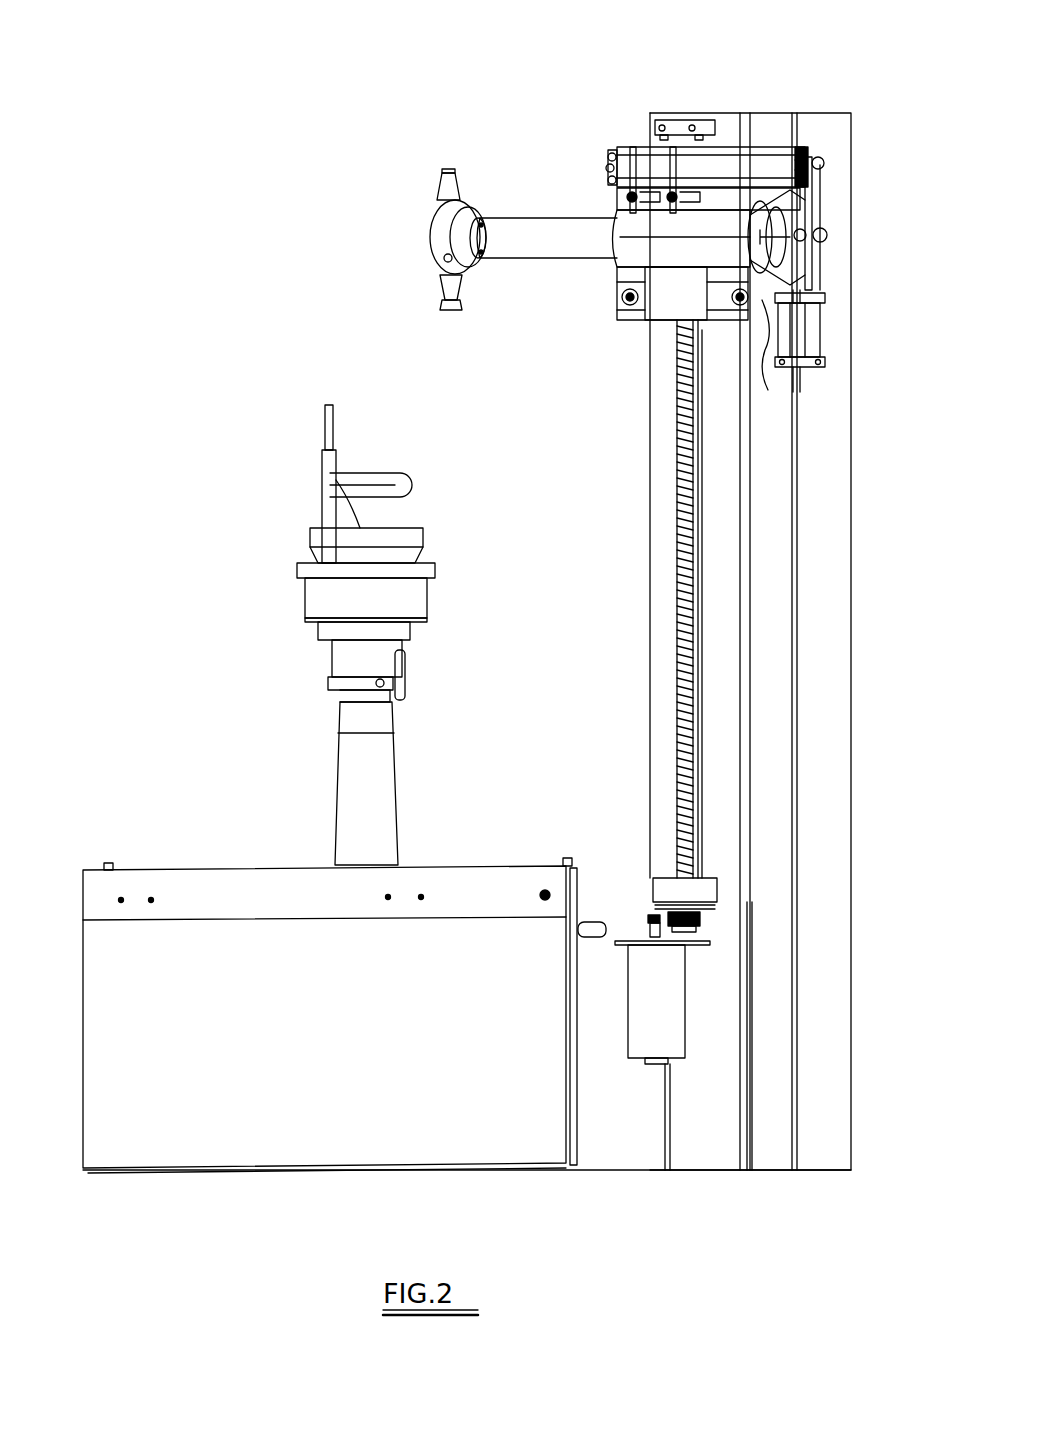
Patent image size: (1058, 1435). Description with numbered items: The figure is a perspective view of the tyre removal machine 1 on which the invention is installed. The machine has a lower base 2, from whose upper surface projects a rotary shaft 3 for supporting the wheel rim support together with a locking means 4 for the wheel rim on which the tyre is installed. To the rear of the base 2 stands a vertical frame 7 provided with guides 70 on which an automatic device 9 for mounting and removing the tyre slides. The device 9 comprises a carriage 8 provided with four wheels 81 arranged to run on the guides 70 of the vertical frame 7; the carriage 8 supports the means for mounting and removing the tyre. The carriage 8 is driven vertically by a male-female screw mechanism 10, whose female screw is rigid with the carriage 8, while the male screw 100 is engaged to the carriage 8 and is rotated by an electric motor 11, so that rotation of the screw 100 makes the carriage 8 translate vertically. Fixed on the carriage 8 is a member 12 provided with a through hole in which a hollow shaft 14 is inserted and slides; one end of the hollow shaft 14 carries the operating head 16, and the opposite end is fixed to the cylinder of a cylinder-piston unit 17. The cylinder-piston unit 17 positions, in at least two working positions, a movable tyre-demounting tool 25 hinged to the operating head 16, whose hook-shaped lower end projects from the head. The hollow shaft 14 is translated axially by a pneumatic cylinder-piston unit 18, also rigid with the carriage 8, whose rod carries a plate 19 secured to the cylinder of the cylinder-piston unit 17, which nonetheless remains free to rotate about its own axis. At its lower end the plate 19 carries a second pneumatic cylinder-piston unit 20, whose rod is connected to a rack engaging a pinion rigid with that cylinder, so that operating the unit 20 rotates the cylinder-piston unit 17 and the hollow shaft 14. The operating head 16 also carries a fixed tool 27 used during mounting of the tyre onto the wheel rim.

The tyre removal machine 1 is at (200, 264).
The lower base 2 is at (187, 1152).
The rotary shaft 3 is at (347, 790).
The locking means 4 is at (275, 565).
The vertical frame 7 is at (852, 760).
The carriage 8 is at (662, 313).
The automatic device 9 is at (590, 194).
The male-female screw mechanism 10 is at (712, 642).
The electric motor 11 is at (673, 1023).
The member 12 is at (628, 248).
The hollow shaft 14 is at (520, 255).
The operating head 16 is at (432, 228).
The cylinder-piston unit 17 is at (797, 208).
The pneumatic cylinder-piston unit 18 is at (732, 158).
The plate 19 is at (818, 215).
The second pneumatic cylinder-piston unit 20 is at (807, 334).
The movable tyre-demounting tool 25 is at (440, 305).
The fixed tool 27 is at (450, 173).
The guides 70 is at (745, 900).
The wheels 81 is at (768, 385).
The male screw 100 is at (700, 815).